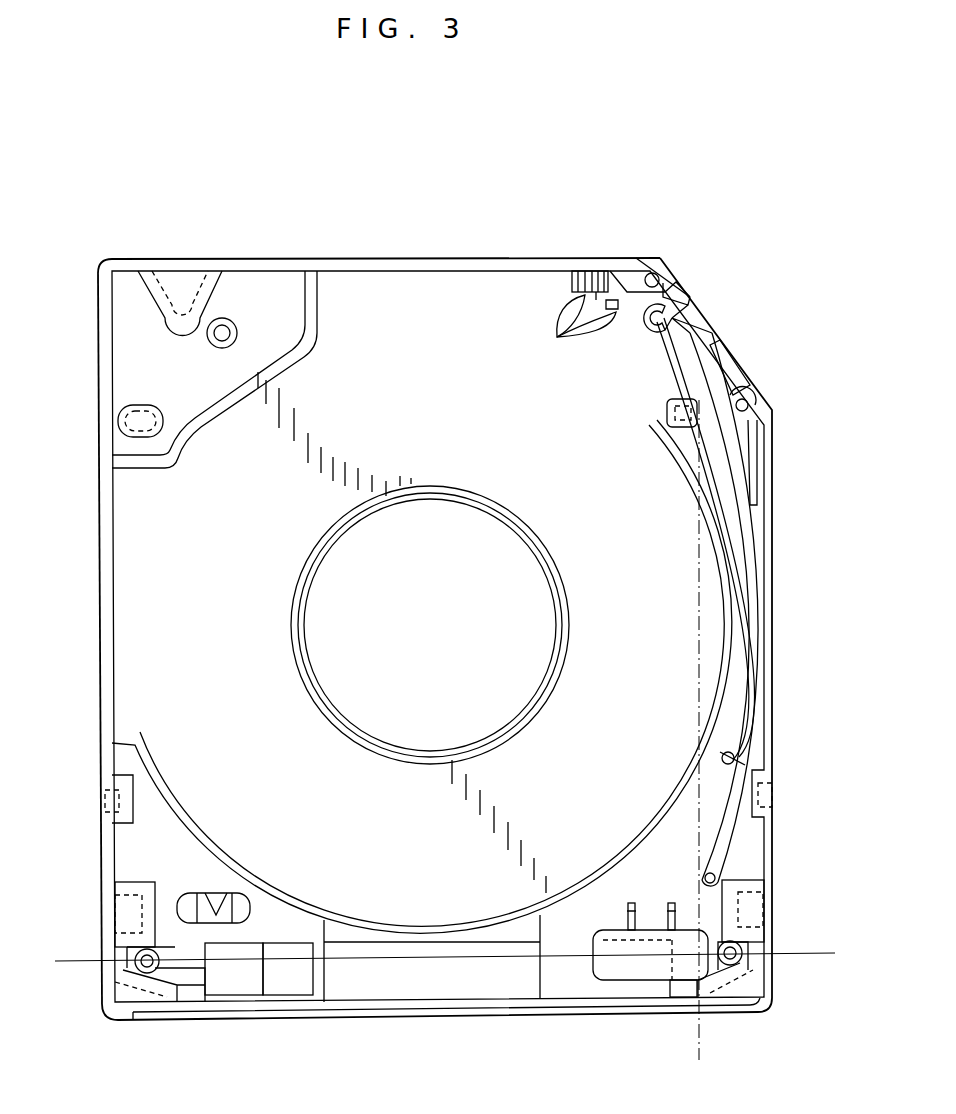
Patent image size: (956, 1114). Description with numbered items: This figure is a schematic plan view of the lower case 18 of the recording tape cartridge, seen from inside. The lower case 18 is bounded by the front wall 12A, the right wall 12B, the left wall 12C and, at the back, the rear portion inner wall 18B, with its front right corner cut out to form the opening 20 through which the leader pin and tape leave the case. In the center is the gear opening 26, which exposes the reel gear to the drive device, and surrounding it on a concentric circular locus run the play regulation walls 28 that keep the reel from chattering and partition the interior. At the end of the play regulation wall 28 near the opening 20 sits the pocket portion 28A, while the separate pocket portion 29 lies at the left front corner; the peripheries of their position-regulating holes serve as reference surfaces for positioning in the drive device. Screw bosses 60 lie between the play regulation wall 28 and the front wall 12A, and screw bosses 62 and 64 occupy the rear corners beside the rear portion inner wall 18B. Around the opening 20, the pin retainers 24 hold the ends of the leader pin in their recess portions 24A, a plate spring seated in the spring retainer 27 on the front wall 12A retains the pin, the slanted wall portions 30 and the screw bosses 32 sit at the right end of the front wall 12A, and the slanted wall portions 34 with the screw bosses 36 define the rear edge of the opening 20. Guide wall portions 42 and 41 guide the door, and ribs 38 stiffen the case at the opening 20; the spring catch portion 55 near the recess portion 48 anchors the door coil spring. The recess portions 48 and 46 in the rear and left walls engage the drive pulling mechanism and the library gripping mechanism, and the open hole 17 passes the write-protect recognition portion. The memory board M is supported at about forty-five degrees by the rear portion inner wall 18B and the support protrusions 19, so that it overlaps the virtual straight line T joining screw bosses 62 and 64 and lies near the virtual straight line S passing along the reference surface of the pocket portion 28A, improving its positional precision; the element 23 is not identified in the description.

The lower case 18 is at (470, 176).
The front wall 12A is at (362, 256).
The right wall 12B is at (773, 625).
The left wall 12C is at (97, 600).
The rear portion inner wall 18B is at (560, 980).
The screw bosses 60 is at (228, 318).
The pocket portion 29 is at (140, 404).
The play regulation walls 28 is at (196, 444).
The pocket portion 28A is at (666, 410).
The gear opening 26 is at (413, 500).
The recess portion 48 is at (112, 797).
The recess portions 46 is at (115, 905).
The open hole 17 is at (212, 893).
The screw bosses 62 is at (118, 975).
The screw bosses 64 is at (745, 958).
The virtual straight line T is at (795, 950).
The virtual straight line S is at (705, 1048).
The memory board M is at (648, 960).
The support protrusions 19 is at (672, 902).
The opening 20 is at (720, 313).
The ribs 38 is at (745, 350).
The screw bosses 36 is at (750, 402).
The slanted wall portions 34 is at (725, 462).
The spring catch portion 55 is at (735, 752).
The guide wall portions 42 is at (716, 845).
The rack member 23 is at (592, 268).
The spring retainer 27 is at (579, 329).
The slanted wall portions 30 is at (676, 272).
The screw bosses 32 is at (651, 272).
The guide wall portions 41 is at (690, 300).
The pin retainers 24 is at (645, 320).
The recess portions 24A is at (658, 333).